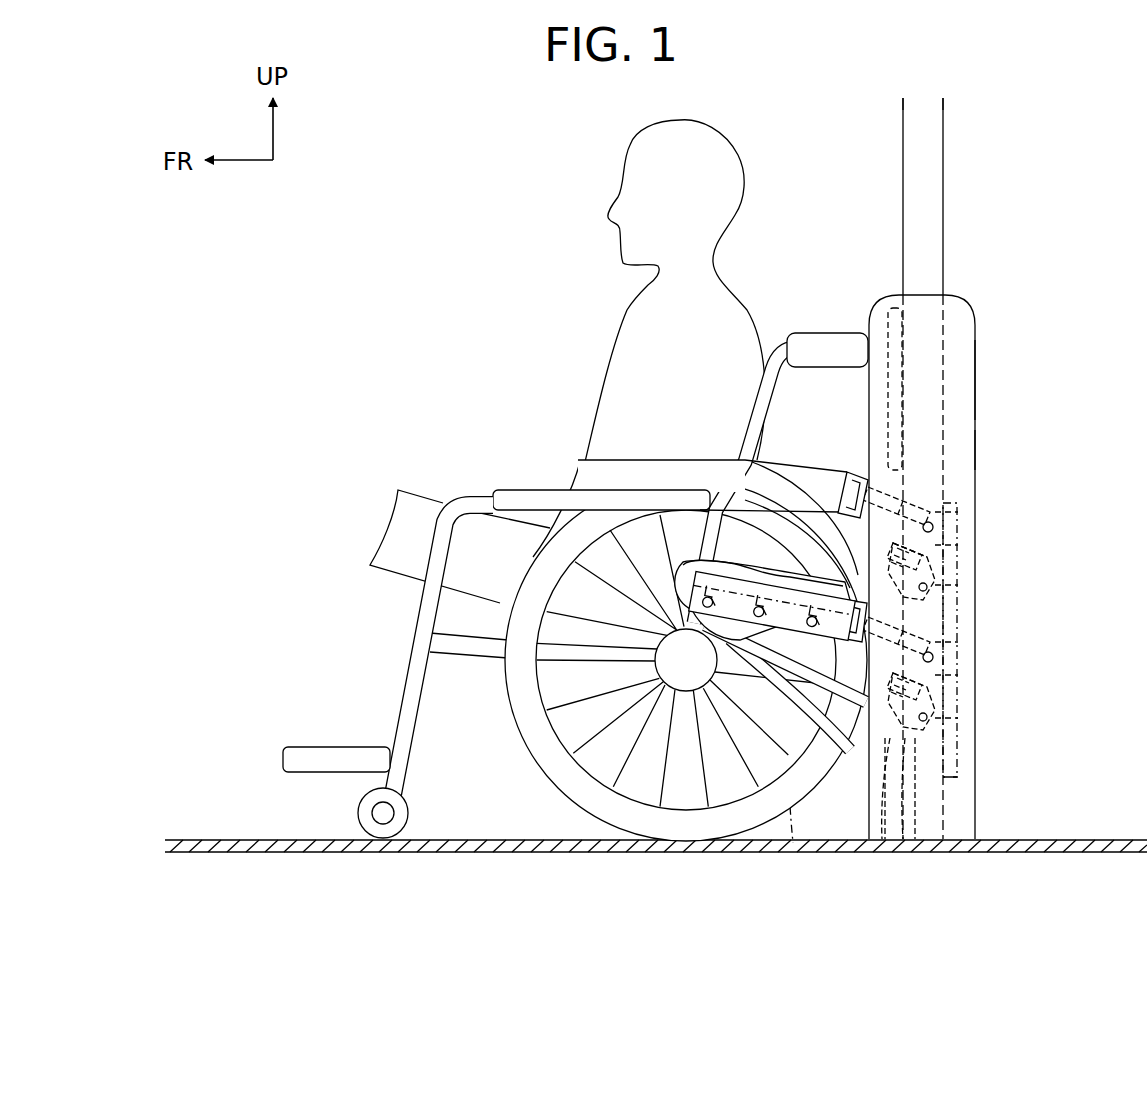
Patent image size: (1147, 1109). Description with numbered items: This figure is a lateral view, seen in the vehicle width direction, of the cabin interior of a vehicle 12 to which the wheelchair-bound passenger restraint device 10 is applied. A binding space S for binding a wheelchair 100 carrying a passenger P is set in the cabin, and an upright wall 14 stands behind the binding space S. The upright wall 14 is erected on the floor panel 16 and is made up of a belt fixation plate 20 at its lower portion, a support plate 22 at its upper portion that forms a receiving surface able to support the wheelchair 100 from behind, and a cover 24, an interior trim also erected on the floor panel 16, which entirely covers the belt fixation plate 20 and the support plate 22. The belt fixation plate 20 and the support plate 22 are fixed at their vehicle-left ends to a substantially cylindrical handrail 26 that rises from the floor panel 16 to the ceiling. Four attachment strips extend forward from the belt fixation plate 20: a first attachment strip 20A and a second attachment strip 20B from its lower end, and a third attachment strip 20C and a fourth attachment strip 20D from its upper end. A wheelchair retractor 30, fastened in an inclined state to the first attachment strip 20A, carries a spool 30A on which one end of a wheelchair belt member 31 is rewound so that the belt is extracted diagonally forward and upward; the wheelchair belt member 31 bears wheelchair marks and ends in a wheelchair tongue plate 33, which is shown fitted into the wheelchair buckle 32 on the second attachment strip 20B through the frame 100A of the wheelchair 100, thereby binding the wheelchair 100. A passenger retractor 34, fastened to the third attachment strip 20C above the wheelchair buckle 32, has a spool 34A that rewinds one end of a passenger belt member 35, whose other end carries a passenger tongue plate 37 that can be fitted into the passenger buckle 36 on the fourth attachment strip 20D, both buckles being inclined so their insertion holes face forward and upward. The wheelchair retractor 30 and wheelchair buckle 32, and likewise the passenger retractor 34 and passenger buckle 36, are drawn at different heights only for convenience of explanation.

The wheelchair-bound passenger restraint device 10 is at (1015, 447).
The vehicle 12 is at (1025, 160).
The upright wall 14 is at (975, 305).
The floor panel 16 is at (200, 838).
The belt fixation plate 20 is at (960, 740).
The first attachment strip 20A is at (985, 843).
The second attachment strip 20B is at (950, 683).
The third attachment strip 20C is at (955, 585).
The fourth attachment strip 20D is at (960, 520).
The support plate 22 is at (888, 305).
The cover 24 is at (977, 382).
The handrail 26 is at (945, 130).
The wheelchair retractor 30 is at (915, 843).
The spool 30A is at (895, 745).
The wheelchair belt member 31 is at (792, 846).
The wheelchair buckle 32 is at (950, 636).
The wheelchair tongue plate 33 is at (808, 575).
The passenger retractor 34 is at (948, 590).
The spool 34A is at (938, 549).
The passenger belt member 35 is at (590, 452).
The passenger buckle 36 is at (885, 505).
The passenger tongue plate 37 is at (846, 468).
The wheelchair 100 is at (513, 485).
The frame 100A is at (748, 390).
The passenger P is at (633, 140).
The binding space S is at (342, 607).